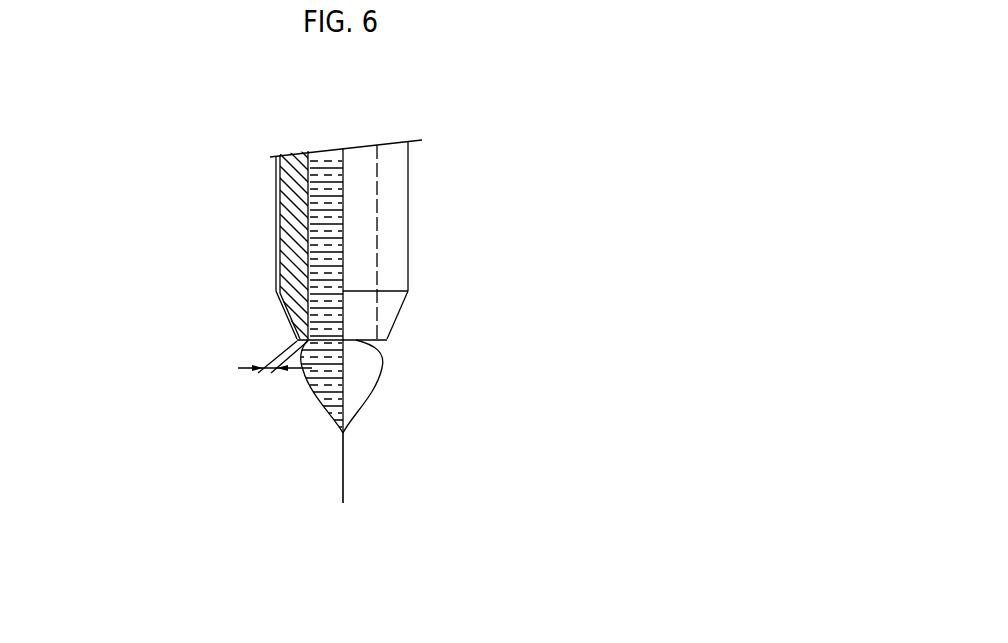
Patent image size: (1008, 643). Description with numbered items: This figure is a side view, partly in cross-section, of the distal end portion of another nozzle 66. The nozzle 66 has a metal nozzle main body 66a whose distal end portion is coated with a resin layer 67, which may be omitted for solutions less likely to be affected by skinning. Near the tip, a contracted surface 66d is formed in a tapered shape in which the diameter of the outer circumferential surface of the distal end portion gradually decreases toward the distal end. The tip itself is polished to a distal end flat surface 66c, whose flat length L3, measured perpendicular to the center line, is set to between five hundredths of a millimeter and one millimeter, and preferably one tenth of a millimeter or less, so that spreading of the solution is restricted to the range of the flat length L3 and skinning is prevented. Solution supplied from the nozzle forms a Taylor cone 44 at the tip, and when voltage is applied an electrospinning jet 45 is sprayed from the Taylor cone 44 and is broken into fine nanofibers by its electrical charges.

The nozzle 66 is at (411, 251).
The metal nozzle main body 66a is at (297, 167).
The distal end flat surface 66c is at (385, 341).
The contracted surface 66d is at (400, 317).
The resin layer 67 is at (277, 248).
The flat length L3 is at (266, 357).
The Taylor cone 44 is at (378, 378).
The electrospinning jet 45 is at (345, 470).